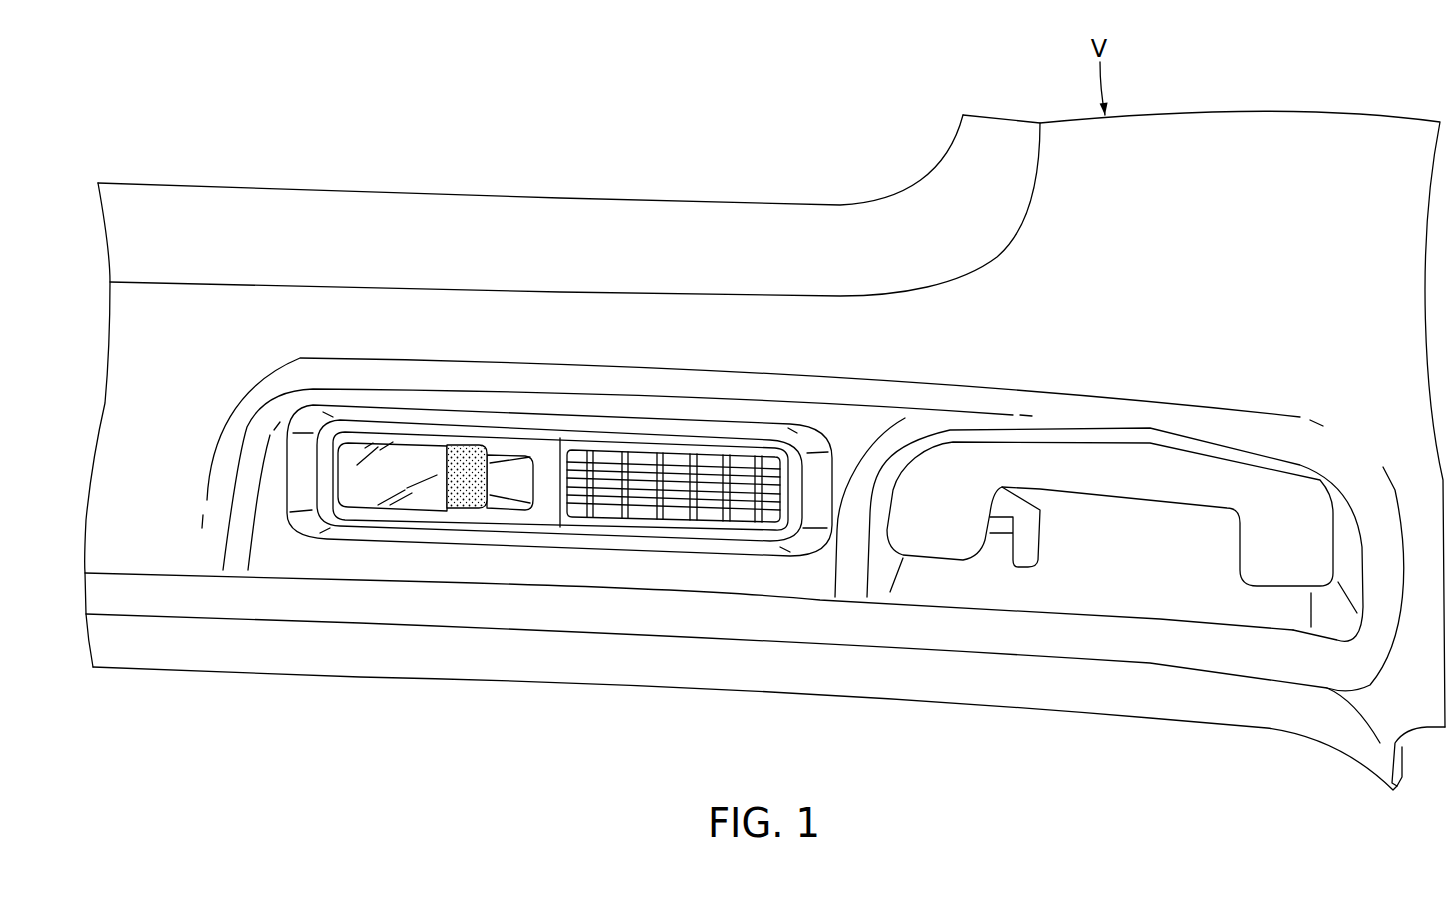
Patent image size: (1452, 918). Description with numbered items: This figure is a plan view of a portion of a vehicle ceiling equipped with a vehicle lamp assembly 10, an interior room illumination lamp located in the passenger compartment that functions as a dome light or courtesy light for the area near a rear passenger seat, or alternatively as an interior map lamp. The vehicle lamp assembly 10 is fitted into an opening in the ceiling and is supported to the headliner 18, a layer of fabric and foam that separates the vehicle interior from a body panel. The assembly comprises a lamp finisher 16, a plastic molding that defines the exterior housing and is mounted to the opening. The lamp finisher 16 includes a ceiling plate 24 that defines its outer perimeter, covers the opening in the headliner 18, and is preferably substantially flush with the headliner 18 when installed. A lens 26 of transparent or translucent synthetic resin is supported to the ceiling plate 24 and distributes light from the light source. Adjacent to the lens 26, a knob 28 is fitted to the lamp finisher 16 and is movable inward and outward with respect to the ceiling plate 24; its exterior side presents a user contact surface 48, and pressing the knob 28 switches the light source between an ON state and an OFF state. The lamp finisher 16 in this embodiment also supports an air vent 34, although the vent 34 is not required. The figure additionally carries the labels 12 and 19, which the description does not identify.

The vehicle lamp assembly 10 is at (632, 350).
The door trim panel 12 is at (417, 735).
The lamp finisher 16 is at (705, 556).
The headliner 18 is at (1047, 340).
The upper trim portion 19 is at (1210, 160).
The ceiling plate 24 is at (303, 523).
The lens 26 is at (370, 485).
The knob 28 is at (467, 492).
The air vent 34 is at (743, 450).
The user contact surface 48 is at (470, 462).